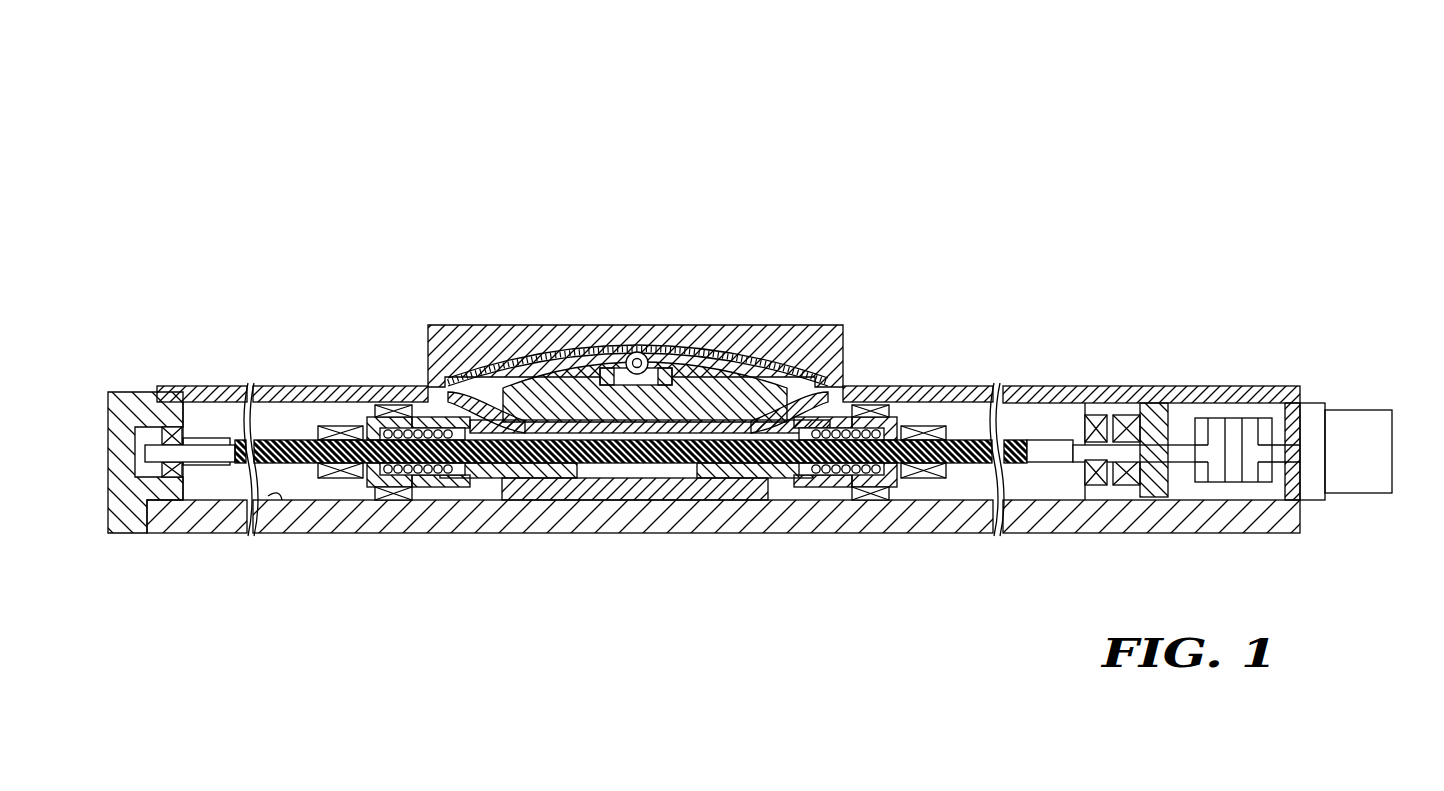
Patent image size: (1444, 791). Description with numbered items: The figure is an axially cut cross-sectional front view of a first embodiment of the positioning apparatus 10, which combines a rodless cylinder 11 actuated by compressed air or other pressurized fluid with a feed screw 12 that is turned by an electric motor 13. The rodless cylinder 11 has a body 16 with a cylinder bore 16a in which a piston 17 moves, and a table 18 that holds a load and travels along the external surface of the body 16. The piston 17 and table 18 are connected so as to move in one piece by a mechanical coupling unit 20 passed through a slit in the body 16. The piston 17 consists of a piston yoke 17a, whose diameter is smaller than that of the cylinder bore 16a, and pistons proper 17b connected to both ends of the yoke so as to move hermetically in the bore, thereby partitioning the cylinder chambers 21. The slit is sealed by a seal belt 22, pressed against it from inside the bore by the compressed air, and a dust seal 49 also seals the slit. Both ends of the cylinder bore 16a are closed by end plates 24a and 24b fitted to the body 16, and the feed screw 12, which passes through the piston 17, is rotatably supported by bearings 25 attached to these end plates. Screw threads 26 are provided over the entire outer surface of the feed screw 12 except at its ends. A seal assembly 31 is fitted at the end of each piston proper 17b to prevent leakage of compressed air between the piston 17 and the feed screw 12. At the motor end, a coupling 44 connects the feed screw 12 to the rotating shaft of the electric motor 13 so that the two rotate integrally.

The positioning apparatus 10 is at (847, 225).
The rodless cylinder 11 is at (973, 372).
The feed screw 12 is at (963, 473).
The electric motor 13 is at (1380, 396).
The body 16 is at (358, 510).
The cylinder bore 16a is at (272, 492).
The piston 17 is at (632, 534).
The piston yoke 17a is at (628, 487).
The pistons proper 17b is at (728, 597).
The table 18 is at (733, 328).
The mechanical coupling unit 20 is at (582, 367).
The cylinder chambers 21 is at (213, 487).
The seal belt 22 is at (310, 398).
The end plate 24a is at (1247, 398).
The end plate 24b is at (122, 487).
The bearings 25 is at (173, 427).
The screw threads 26 is at (785, 467).
The seal assembly 31 is at (343, 421).
The coupling 44 is at (1258, 470).
The dust seal 49 is at (874, 387).